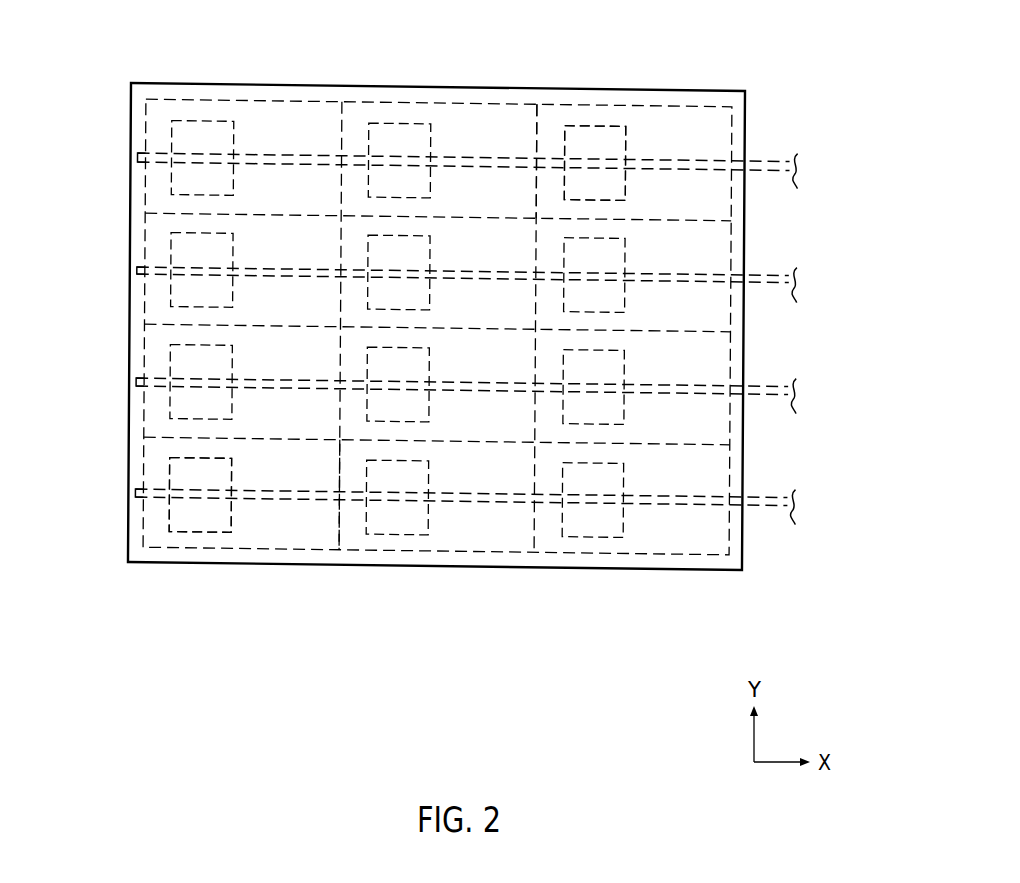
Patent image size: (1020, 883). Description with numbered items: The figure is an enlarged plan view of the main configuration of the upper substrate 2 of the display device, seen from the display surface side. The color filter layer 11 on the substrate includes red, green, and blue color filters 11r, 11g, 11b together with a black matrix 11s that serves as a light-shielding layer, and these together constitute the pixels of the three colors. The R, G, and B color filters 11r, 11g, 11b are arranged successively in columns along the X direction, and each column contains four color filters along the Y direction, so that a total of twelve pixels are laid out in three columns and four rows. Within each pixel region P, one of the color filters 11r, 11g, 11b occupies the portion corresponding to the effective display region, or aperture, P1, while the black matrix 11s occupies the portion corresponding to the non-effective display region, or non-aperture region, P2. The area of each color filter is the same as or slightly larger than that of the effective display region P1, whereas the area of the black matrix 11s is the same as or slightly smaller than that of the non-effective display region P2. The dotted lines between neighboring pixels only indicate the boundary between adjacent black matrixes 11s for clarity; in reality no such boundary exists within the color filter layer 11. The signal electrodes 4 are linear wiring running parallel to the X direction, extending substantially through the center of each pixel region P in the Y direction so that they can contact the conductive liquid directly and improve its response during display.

The upper substrate 2 is at (131, 84).
The color filter layer 11 is at (504, 104).
The red color filter 11r is at (203, 126).
The green color filter 11g is at (398, 130).
The blue color filter 11b is at (580, 134).
The black matrix 11s is at (301, 518).
The pixel region P is at (703, 133).
The effective display region P1 is at (619, 138).
The non-effective display region P2 is at (668, 130).
The signal electrode 4 is at (766, 170).